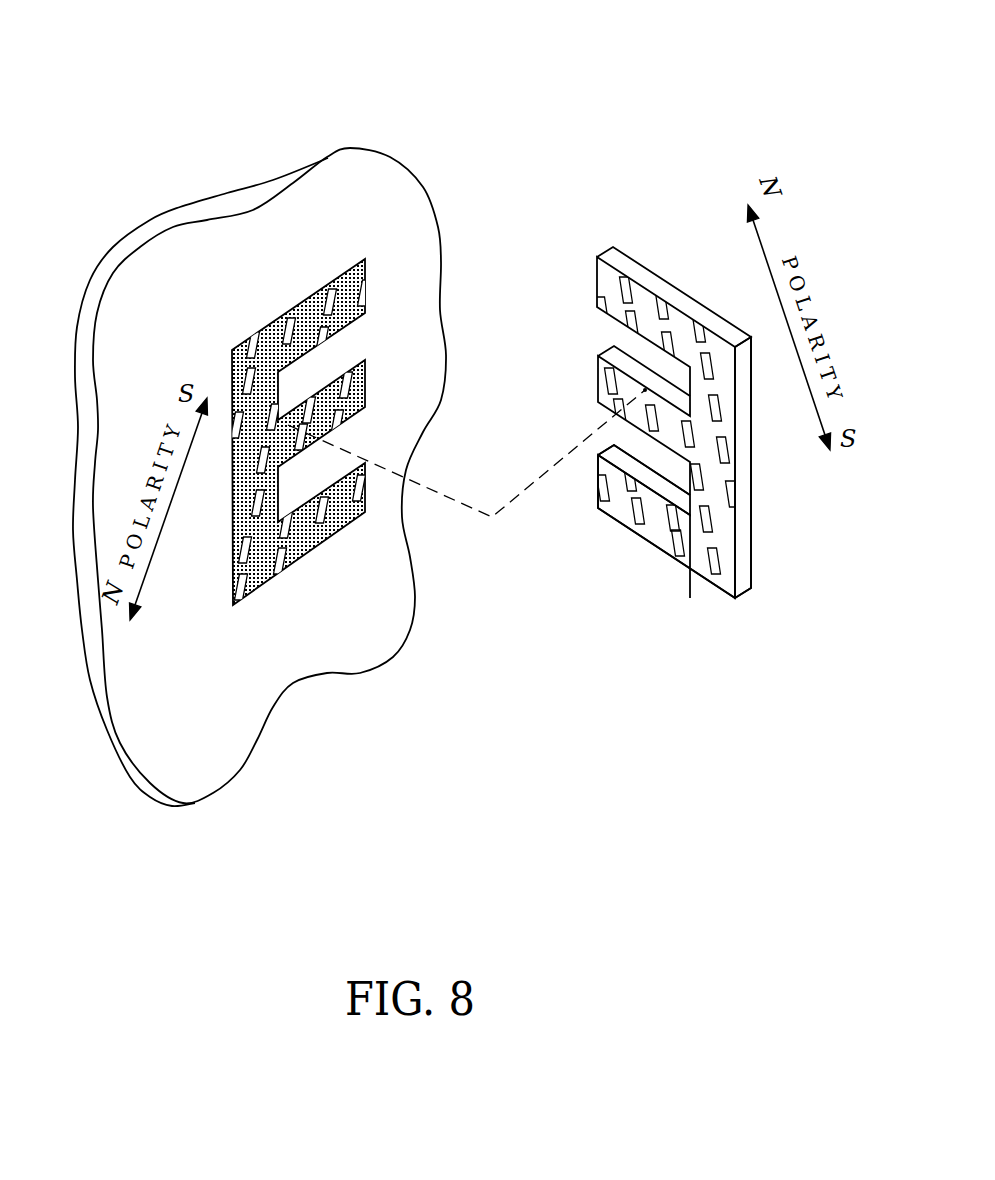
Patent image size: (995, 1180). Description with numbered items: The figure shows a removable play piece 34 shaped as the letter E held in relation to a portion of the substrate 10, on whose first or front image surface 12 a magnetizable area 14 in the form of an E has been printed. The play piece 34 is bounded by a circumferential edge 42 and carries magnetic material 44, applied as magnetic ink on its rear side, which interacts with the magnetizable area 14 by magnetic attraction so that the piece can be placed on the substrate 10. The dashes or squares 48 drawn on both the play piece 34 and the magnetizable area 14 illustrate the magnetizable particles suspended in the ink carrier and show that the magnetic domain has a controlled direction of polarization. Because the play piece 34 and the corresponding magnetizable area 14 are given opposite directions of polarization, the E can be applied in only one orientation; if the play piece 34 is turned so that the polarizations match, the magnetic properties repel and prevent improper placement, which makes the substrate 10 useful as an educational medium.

The substrate 10 is at (209, 185).
The first or front image surface 12 is at (373, 176).
The magnetizable area 14 is at (232, 360).
The removable play piece 34 is at (630, 257).
The circumferential edge 42 is at (748, 521).
The magnetic material 44 is at (682, 525).
The dashes or squares 48 is at (712, 566).